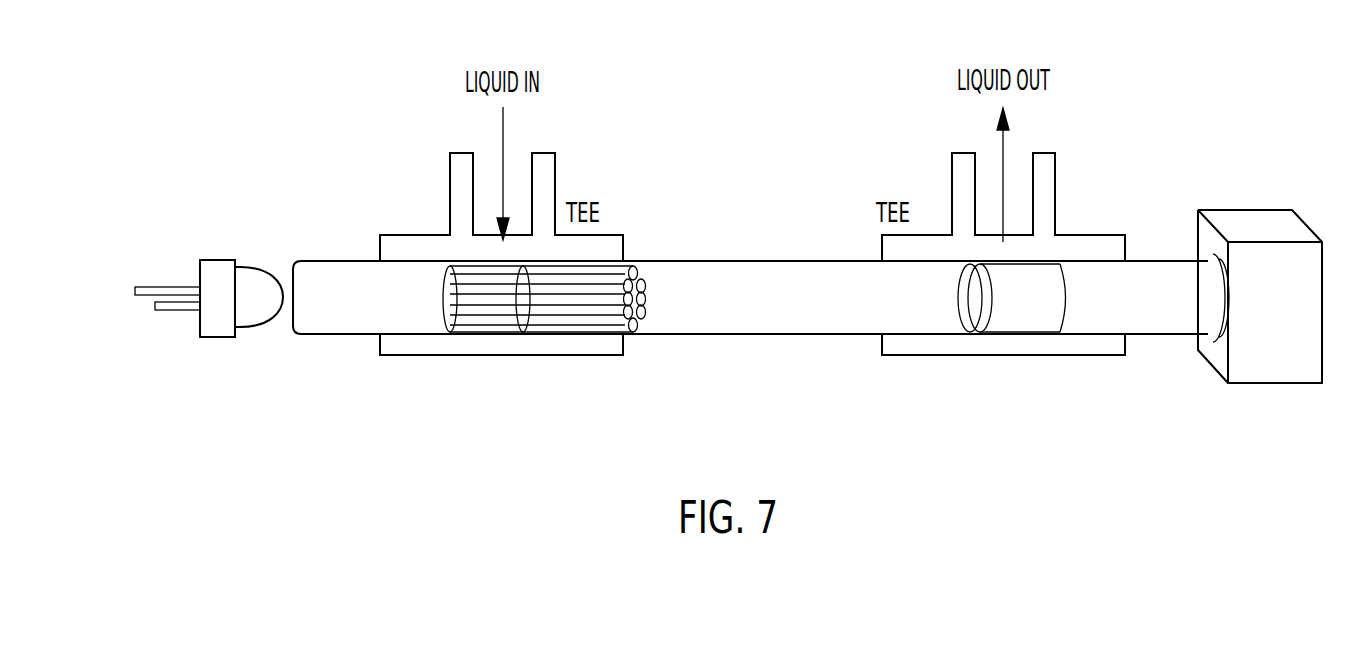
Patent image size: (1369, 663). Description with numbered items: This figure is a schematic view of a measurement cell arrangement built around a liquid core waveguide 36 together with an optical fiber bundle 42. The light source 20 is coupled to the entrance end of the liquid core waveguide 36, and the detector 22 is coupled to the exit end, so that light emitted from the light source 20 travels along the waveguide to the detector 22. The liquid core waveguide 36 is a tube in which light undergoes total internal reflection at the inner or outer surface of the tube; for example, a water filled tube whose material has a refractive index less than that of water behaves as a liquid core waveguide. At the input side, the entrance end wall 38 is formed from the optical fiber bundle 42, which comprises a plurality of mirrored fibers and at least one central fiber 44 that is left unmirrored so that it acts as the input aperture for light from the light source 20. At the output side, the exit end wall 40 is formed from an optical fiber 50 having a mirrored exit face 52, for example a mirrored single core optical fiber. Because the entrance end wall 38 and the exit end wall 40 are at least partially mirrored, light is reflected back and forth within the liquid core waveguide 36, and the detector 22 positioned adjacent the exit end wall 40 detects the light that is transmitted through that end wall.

The light source 20 is at (214, 233).
The detector 22 is at (1255, 210).
The liquid core waveguide 36 is at (745, 386).
The entrance end wall 38 is at (634, 333).
The exit end wall 40 is at (972, 310).
The optical fiber bundle 42 is at (325, 386).
The central fiber 44 is at (634, 278).
The optical fiber 50 is at (1175, 386).
The mirrored exit face 52 is at (972, 278).